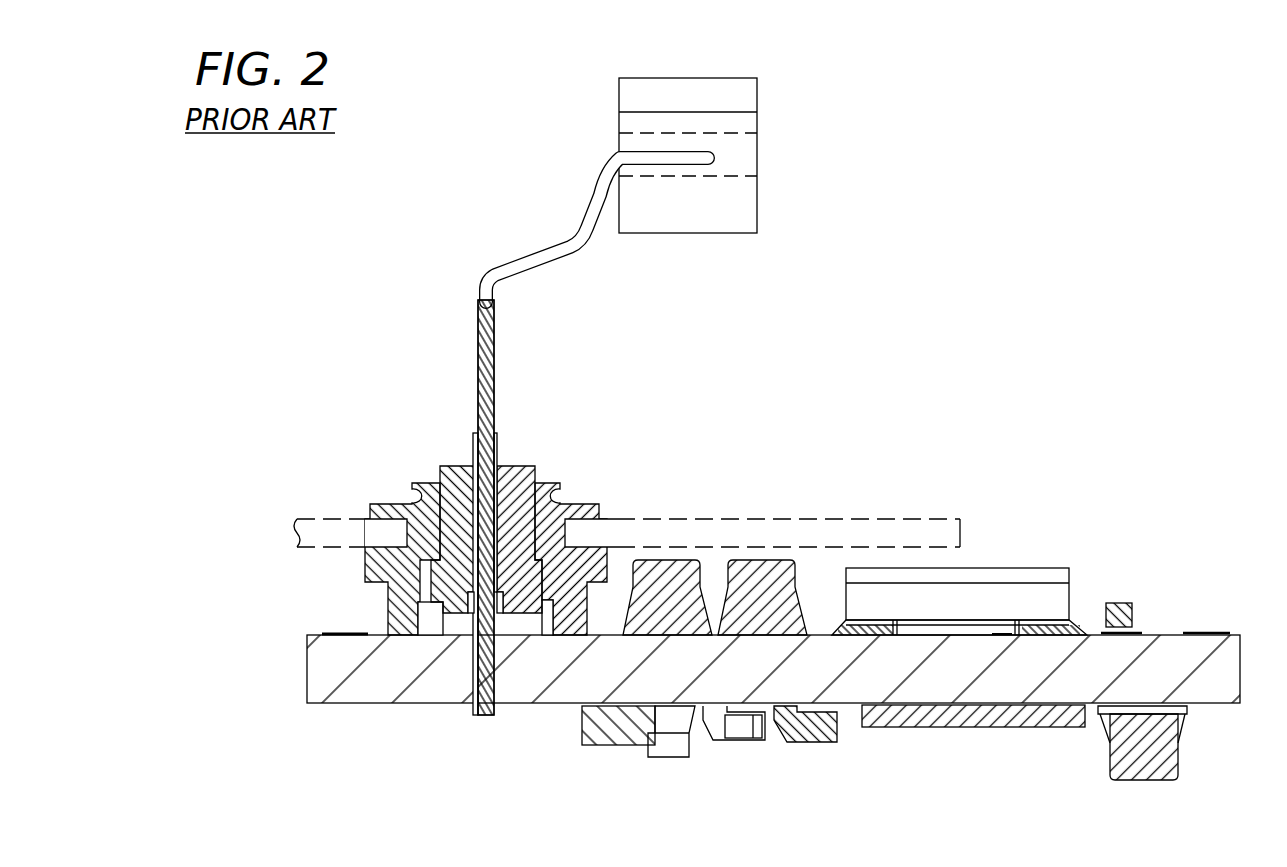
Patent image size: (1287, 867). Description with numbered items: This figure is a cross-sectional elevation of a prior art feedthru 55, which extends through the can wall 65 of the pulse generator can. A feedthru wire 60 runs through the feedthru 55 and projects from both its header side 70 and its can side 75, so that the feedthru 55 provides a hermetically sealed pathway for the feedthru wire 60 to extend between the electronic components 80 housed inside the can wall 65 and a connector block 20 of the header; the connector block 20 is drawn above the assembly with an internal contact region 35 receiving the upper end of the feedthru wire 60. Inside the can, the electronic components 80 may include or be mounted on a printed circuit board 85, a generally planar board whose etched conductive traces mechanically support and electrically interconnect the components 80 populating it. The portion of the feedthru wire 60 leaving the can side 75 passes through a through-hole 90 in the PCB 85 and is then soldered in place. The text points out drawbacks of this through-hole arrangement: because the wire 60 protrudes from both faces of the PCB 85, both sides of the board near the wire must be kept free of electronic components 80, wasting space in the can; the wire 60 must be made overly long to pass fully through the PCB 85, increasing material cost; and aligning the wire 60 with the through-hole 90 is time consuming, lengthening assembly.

The connector block 20 is at (757, 121).
The terminal block contact 35 is at (767, 178).
The feedthru wire 60 is at (562, 253).
The header side 70 is at (517, 441).
The feedthru 55 is at (585, 489).
The can wall 65 is at (795, 518).
The electronic components 80 is at (1018, 565).
The printed circuit board 85 is at (306, 683).
The can side 75 is at (445, 642).
The through-hole 90 is at (473, 679).